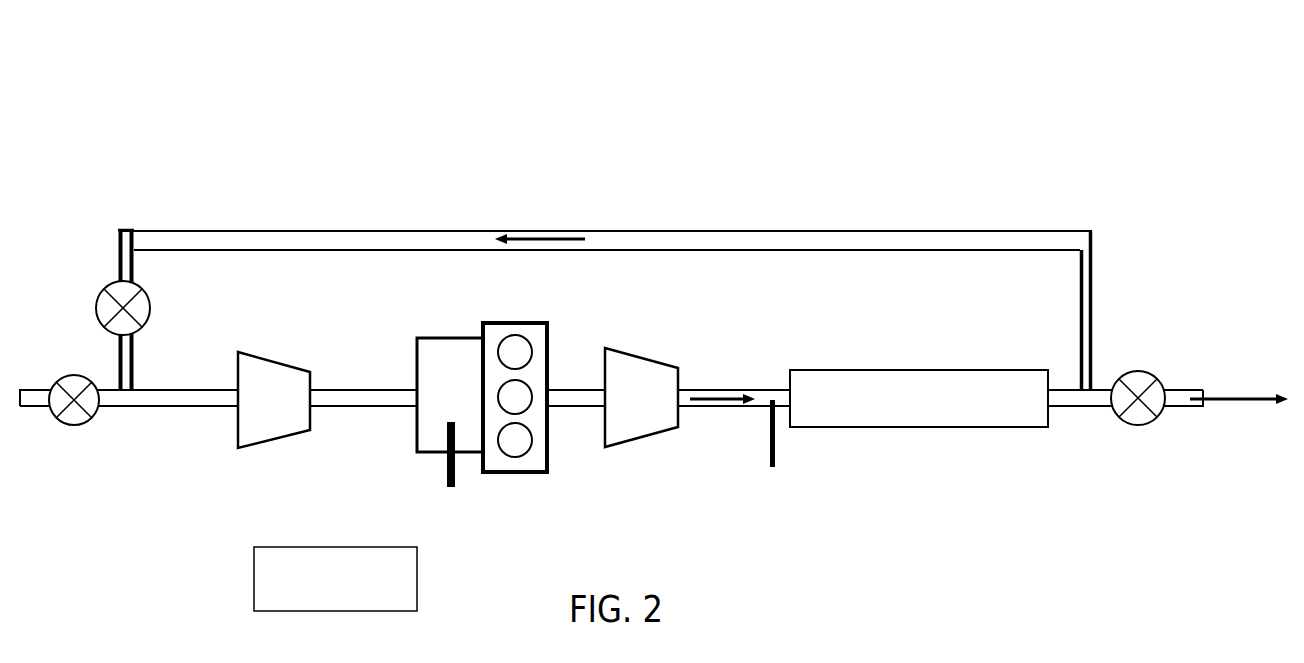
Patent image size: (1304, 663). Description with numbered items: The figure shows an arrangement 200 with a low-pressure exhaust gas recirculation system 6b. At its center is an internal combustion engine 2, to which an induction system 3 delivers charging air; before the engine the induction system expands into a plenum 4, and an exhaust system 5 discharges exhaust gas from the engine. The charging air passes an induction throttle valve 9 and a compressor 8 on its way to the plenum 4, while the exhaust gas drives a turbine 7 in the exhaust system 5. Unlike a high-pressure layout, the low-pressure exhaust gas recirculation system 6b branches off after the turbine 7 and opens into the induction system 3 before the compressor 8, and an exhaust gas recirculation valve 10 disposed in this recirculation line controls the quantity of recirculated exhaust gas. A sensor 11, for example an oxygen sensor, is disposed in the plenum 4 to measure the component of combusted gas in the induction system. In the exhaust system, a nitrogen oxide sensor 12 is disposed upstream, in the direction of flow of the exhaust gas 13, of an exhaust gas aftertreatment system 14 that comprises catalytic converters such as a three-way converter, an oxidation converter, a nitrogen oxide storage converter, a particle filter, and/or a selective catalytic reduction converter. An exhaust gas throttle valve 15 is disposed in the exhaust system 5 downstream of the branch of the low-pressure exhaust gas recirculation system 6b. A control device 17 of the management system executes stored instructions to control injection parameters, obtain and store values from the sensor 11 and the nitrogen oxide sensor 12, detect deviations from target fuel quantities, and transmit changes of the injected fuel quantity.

The arrangement 200 is at (1130, 66).
The internal combustion engine 2 is at (530, 458).
The induction system 3 is at (390, 400).
The plenum 4 is at (445, 397).
The exhaust system 5 is at (577, 410).
The low-pressure exhaust gas recirculation system 6b is at (655, 245).
The turbine 7 is at (643, 415).
The compressor 8 is at (258, 382).
The induction throttle valve 9 is at (68, 382).
The exhaust gas recirculation valve 10 is at (103, 307).
The f_man sensor 11 is at (447, 472).
The nitrogen oxide sensor 12 is at (775, 447).
The exhaust gas 13 is at (1215, 397).
The exhaust gas aftertreatment system 14 is at (998, 383).
The exhaust gas throttle valve 15 is at (1137, 377).
The control device 17 is at (335, 579).